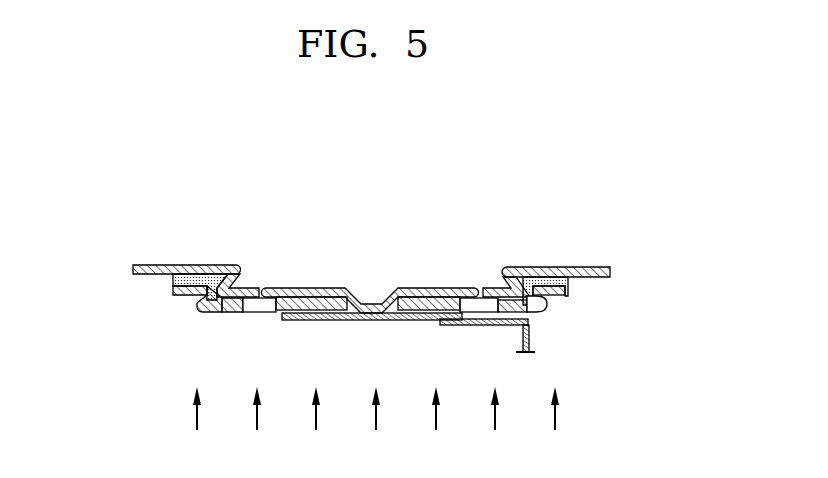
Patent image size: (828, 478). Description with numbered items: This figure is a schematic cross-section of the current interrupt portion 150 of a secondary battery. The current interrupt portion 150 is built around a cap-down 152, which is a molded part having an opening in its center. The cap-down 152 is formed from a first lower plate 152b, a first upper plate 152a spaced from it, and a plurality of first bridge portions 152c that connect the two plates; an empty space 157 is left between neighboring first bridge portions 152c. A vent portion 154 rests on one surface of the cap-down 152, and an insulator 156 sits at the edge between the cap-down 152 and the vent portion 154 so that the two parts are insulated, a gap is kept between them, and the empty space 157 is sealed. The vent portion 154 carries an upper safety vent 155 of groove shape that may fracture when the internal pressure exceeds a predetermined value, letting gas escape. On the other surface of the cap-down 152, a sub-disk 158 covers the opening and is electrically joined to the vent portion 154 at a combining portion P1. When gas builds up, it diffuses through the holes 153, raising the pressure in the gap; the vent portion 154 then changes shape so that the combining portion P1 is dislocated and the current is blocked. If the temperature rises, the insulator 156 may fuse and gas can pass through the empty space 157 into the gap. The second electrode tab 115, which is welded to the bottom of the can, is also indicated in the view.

The current interrupt portion 150 is at (154, 207).
The cap-down 152 is at (171, 328).
The first upper plate 152a is at (177, 290).
The first lower plate 152b is at (218, 300).
The first bridge portions 152c is at (198, 301).
The holes 153 is at (260, 308).
The vent portion 154 is at (595, 268).
The upper safety vent 155 is at (484, 290).
The insulator 156 is at (567, 288).
The empty space 157 is at (545, 306).
The sub-disk 158 is at (346, 314).
The combining portion P1 is at (372, 316).
The second electrode tab 115 is at (531, 341).